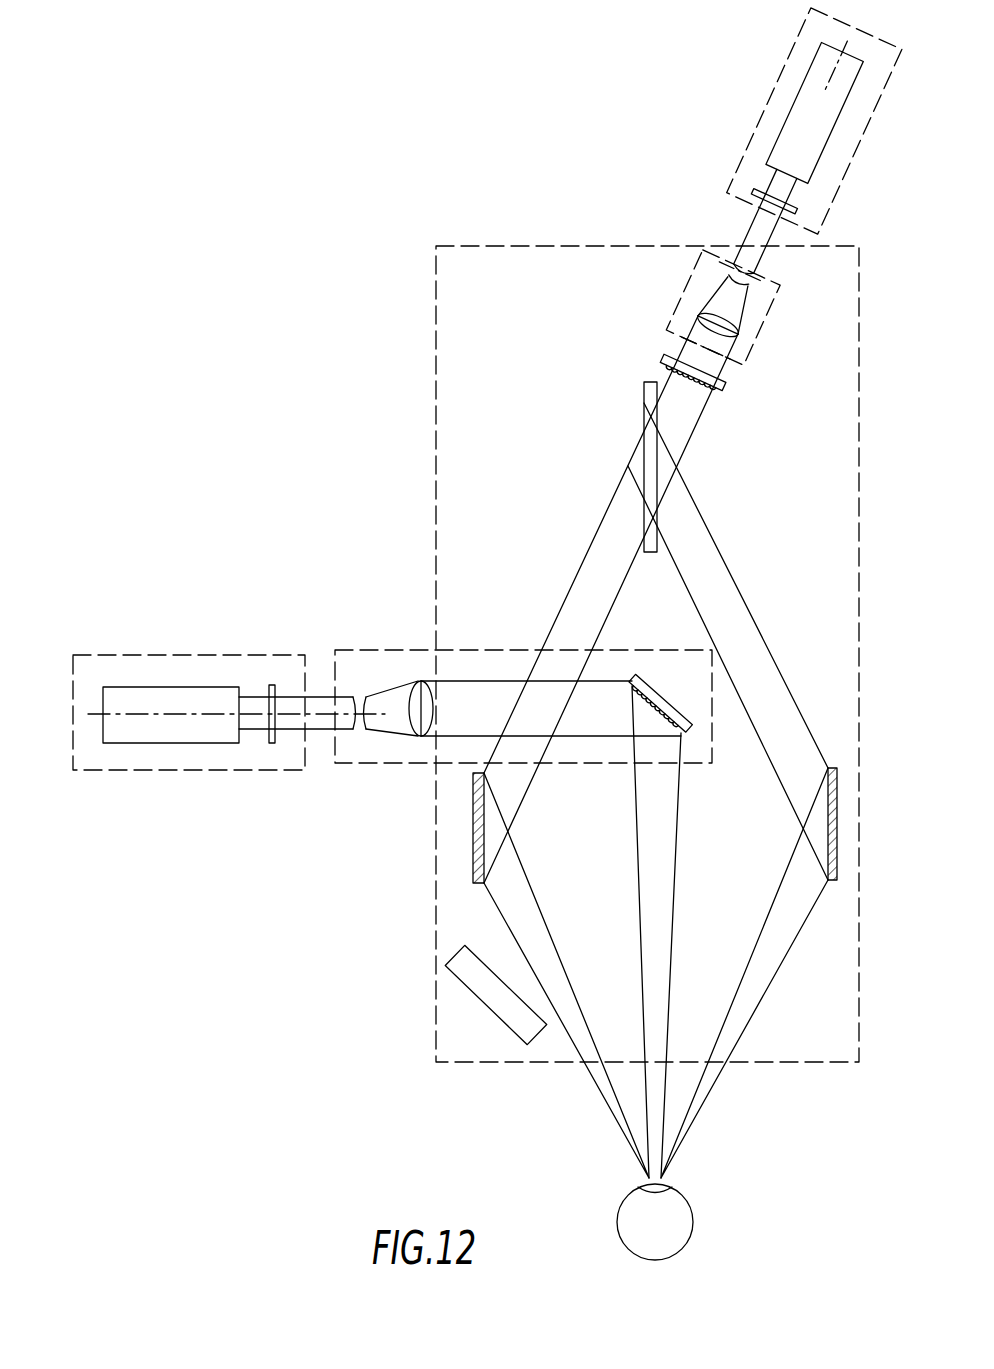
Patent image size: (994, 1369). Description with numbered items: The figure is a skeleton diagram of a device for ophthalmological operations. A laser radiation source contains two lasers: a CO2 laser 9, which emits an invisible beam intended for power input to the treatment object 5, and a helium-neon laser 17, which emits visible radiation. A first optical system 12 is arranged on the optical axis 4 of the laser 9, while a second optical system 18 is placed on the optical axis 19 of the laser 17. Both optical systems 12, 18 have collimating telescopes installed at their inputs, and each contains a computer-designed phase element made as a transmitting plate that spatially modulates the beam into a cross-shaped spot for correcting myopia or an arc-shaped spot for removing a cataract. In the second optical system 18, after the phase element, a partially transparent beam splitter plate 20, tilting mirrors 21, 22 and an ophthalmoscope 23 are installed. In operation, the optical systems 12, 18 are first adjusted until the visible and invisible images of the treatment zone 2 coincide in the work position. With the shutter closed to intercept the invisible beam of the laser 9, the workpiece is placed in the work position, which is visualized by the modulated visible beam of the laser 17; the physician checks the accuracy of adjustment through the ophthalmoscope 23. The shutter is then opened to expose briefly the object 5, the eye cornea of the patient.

The treatment zone 2 is at (672, 1188).
The optical axis 4 is at (92, 714).
The object 5 is at (662, 1232).
The laser 9 is at (171, 716).
The optical system 12 is at (362, 650).
The laser 17 is at (796, 155).
The optical system 18 is at (593, 246).
The optical axis 19 is at (847, 52).
The beam splitter plate 20 is at (644, 403).
The tilting mirror 21 is at (474, 834).
The tilting mirror 22 is at (838, 812).
The ophthalmoscope 23 is at (508, 1014).